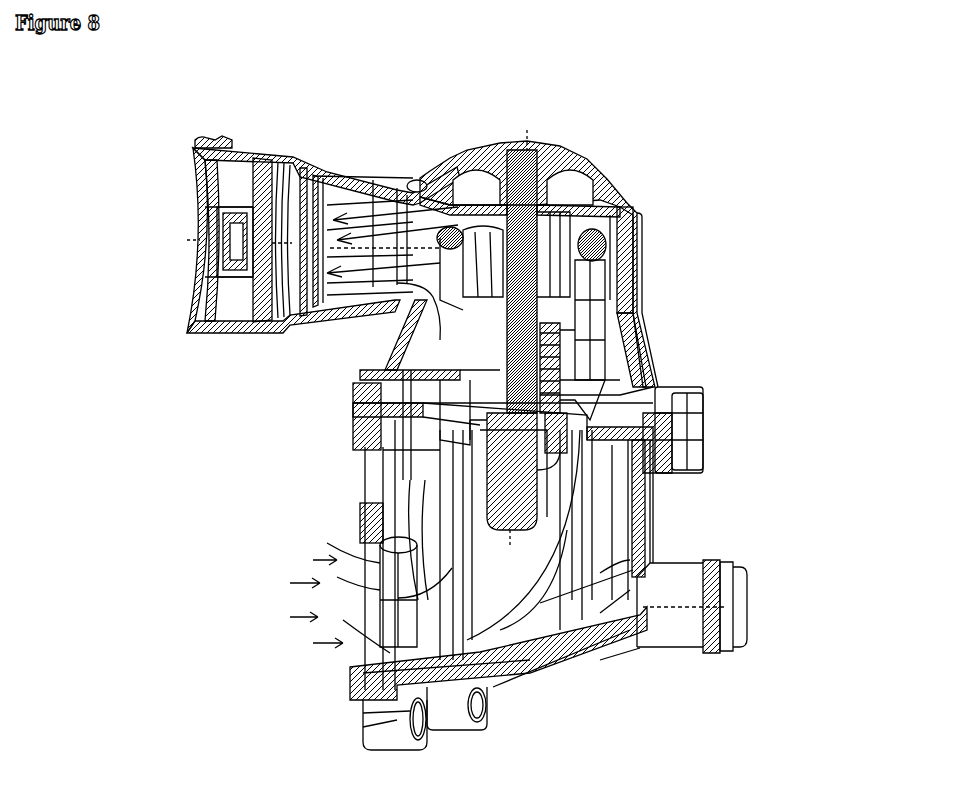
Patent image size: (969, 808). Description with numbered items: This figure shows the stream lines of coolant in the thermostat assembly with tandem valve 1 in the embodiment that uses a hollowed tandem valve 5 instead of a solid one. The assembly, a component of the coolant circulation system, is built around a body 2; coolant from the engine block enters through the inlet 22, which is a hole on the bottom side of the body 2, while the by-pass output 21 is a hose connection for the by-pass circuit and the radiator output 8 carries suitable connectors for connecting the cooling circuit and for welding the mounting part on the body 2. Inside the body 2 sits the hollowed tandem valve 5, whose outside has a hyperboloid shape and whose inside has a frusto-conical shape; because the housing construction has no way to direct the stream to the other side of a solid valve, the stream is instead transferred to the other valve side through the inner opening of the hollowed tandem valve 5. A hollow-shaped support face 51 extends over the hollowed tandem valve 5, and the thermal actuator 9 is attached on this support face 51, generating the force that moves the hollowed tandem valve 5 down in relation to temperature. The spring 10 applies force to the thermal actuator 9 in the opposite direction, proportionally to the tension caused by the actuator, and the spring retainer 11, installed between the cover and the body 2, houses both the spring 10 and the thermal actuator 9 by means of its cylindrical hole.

The thermostat assembly with tandem valve 1 is at (238, 390).
The body 2 is at (630, 258).
The hollowed tandem valve 5 is at (583, 282).
The radiator output 8 is at (215, 197).
The thermal actuator 9 is at (505, 460).
The spring 10 is at (463, 368).
The spring retainer 11 is at (607, 443).
The by-pass output 21 is at (727, 607).
The inlet 22 is at (362, 608).
The support face 51 is at (518, 307).